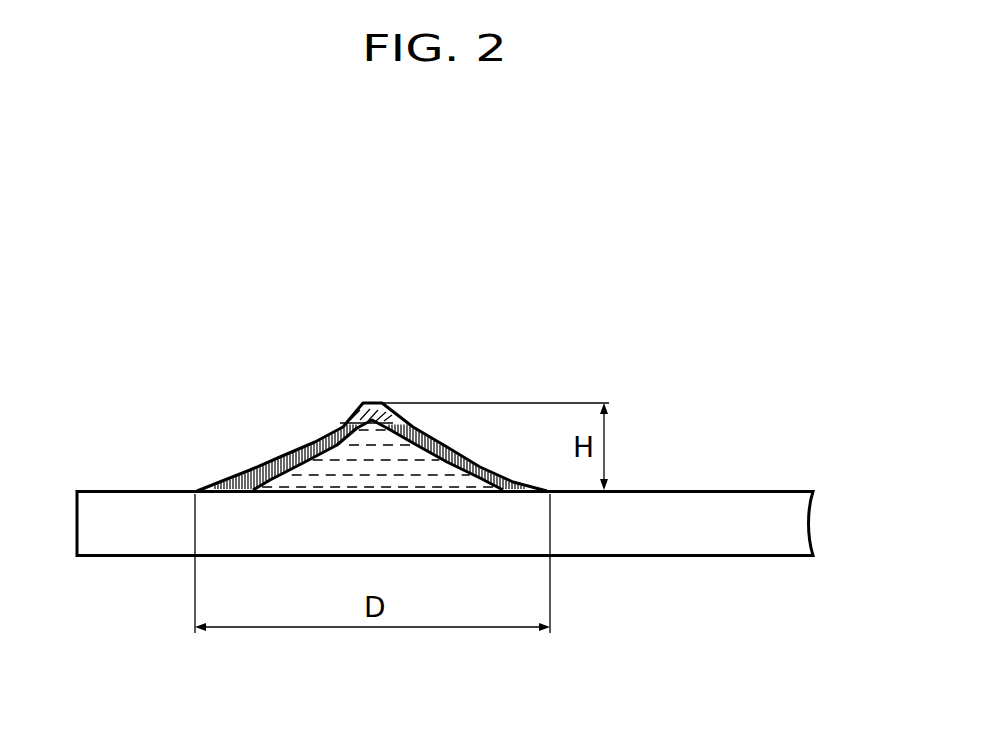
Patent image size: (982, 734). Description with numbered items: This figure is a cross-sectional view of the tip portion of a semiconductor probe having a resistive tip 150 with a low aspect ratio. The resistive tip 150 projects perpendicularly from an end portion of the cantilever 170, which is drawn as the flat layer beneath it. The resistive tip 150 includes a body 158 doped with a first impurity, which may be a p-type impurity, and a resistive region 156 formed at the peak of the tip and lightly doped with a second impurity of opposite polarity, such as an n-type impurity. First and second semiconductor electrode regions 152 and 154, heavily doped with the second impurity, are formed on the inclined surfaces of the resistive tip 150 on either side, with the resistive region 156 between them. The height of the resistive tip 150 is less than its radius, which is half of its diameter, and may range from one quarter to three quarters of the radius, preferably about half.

The resistive tip 150 is at (537, 343).
The first semiconductor electrode region 152 is at (250, 470).
The second semiconductor electrode region 154 is at (443, 450).
The resistive region 156 is at (380, 402).
The body 158 is at (350, 458).
The cantilever 170 is at (662, 507).